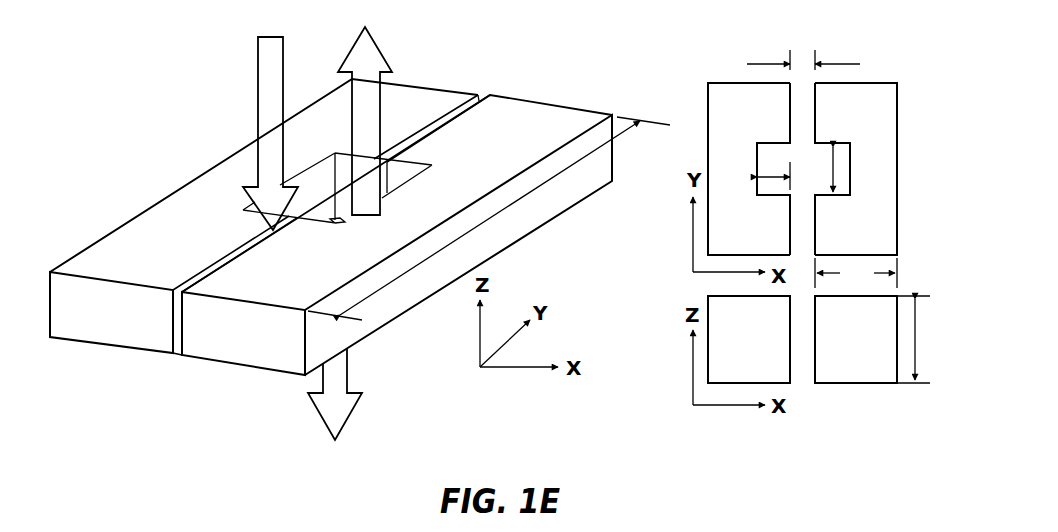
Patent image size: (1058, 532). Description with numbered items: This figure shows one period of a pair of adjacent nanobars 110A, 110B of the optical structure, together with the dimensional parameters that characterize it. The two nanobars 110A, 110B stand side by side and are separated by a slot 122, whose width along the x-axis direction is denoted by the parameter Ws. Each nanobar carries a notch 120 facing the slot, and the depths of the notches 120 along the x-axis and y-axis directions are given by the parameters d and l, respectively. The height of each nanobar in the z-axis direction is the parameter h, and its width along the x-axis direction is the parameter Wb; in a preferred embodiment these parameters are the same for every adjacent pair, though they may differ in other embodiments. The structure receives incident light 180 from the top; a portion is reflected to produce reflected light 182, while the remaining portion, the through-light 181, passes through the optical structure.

The nanobar 110A is at (118, 250).
The nanobar 110B is at (527, 122).
The notch 120 is at (767, 147).
The slot 122 is at (802, 118).
The incident light 180 is at (258, 62).
The through-light 181 is at (350, 363).
The reflected light 182 is at (353, 46).